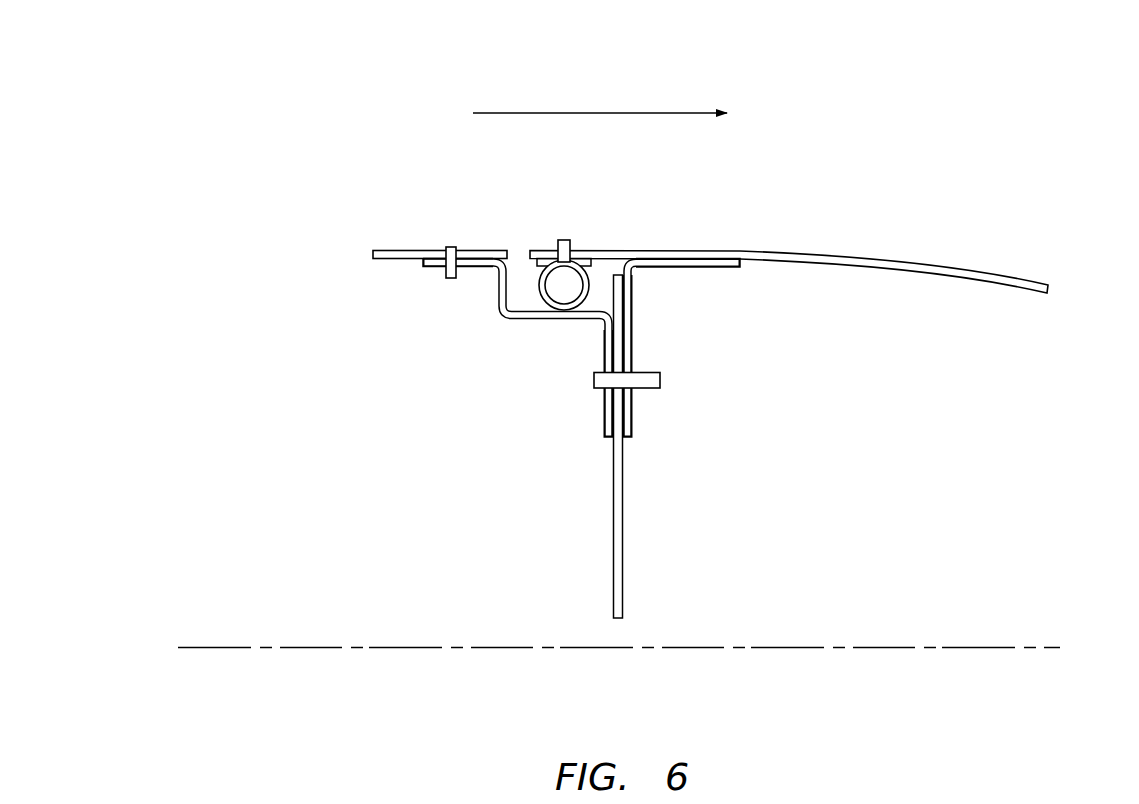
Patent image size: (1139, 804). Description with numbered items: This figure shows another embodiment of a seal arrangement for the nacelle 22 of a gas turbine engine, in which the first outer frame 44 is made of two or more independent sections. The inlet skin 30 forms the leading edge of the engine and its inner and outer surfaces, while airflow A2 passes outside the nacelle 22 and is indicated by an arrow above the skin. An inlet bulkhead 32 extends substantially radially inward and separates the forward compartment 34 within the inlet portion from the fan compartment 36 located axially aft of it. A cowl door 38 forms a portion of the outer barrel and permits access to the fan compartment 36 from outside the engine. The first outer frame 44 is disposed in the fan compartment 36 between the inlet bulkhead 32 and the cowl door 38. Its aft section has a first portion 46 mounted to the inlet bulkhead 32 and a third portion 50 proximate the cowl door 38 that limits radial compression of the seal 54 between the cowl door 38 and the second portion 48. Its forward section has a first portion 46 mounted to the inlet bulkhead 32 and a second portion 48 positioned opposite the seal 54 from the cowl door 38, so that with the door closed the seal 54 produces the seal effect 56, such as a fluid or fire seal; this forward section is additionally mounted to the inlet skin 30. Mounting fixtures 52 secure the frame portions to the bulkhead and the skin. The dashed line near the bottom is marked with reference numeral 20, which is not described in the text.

The airflow A2 is at (578, 112).
The reference plane 20 is at (1026, 648).
The nacelle 22 is at (953, 165).
The inlet skin 30 is at (385, 250).
The inlet bulkhead 32 is at (612, 537).
The forward compartment 34 is at (406, 518).
The fan compartment 36 is at (845, 489).
The cowl door 38 is at (907, 266).
The first outer frame 44 is at (478, 268).
The first portion 46 is at (600, 354).
The second portion 48 is at (518, 326).
The third portion 50 is at (707, 281).
The mounting fixture 52 is at (453, 246).
The seal 54 is at (590, 276).
The seal effect 56 is at (527, 284).